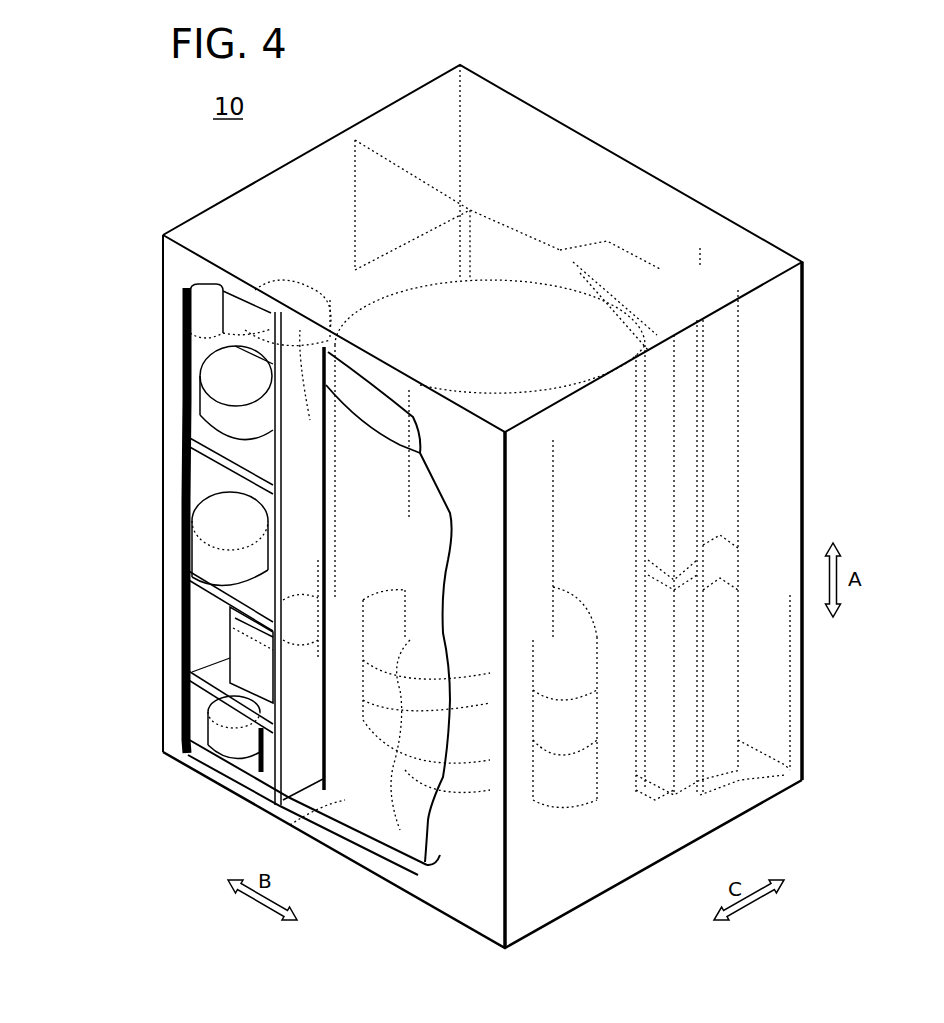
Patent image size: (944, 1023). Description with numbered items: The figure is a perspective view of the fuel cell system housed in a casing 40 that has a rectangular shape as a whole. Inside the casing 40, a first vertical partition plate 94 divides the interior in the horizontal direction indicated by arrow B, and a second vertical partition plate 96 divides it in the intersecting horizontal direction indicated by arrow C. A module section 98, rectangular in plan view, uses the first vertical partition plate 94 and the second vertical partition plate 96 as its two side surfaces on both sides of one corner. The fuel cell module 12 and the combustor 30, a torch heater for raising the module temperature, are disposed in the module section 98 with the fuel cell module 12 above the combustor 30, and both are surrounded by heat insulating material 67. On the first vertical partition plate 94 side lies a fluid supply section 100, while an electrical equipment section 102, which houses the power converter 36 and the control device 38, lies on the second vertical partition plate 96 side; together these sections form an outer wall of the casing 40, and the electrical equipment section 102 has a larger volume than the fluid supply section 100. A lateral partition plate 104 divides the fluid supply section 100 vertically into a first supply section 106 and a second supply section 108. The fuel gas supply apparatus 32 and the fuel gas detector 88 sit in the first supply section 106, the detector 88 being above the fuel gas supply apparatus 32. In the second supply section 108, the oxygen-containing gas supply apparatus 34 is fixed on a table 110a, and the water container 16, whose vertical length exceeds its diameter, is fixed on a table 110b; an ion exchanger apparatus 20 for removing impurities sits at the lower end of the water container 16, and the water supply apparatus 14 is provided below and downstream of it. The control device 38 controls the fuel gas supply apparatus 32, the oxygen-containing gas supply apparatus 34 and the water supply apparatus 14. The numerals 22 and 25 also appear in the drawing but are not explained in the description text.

The fuel cell module 12 is at (541, 577).
The water supply apparatus 14 is at (198, 762).
The water container 16 is at (228, 633).
The ion exchanger apparatus 20 is at (218, 650).
The base 22 is at (255, 782).
The shelf 25 is at (268, 565).
The combustor 30 is at (452, 808).
The fuel gas supply apparatus 32 is at (232, 378).
The oxygen-containing gas supply apparatus 34 is at (224, 520).
The power converter 36 is at (730, 703).
The control device 38 is at (733, 492).
The casing 40 is at (556, 116).
The heat insulating material 67 is at (320, 822).
The detector 88 is at (190, 328).
The first vertical partition plate 94 is at (300, 610).
The second vertical partition plate 96 is at (735, 583).
The module section 98 is at (300, 318).
The fluid supply section 100 is at (90, 428).
The electrical equipment section 102 is at (705, 255).
The lateral partition plate 104 is at (327, 483).
The first supply section 106 is at (182, 412).
The second supply section 108 is at (200, 467).
The table 110a is at (188, 575).
The table 110b is at (188, 672).